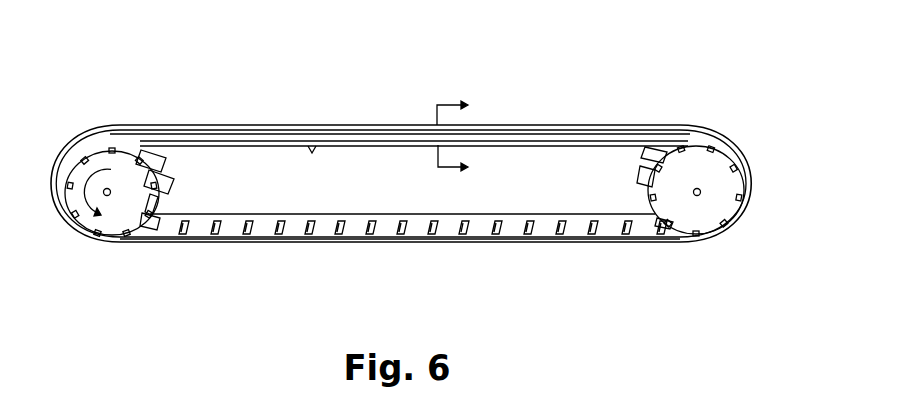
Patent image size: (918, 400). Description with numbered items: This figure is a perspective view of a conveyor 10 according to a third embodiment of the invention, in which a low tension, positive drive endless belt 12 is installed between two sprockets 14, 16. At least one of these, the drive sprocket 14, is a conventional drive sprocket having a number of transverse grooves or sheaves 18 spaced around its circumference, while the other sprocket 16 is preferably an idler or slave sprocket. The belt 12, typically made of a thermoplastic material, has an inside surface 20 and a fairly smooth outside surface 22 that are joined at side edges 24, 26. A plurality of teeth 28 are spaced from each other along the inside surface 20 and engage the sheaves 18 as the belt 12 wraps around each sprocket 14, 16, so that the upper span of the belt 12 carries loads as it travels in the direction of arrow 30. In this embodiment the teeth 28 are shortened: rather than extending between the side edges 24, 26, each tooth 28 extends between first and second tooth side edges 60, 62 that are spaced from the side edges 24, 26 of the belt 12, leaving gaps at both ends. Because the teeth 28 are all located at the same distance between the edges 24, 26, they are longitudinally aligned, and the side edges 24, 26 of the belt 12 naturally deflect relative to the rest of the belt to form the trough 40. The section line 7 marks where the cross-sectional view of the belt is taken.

The conveyor 10 is at (527, 50).
The endless belt 12 is at (253, 125).
The drive sprocket 14 is at (122, 212).
The idler sprocket 16 is at (713, 212).
The sheaves 18 is at (163, 194).
The inside surface 20 is at (543, 227).
The outside surface 22 is at (536, 130).
The side edge 24 is at (352, 127).
The side edge 26 is at (312, 146).
The teeth 28 is at (337, 230).
The arrow 30 is at (86, 200).
The trough 40 is at (603, 132).
The first tooth side edge 60 is at (465, 219).
The second tooth side edge 62 is at (462, 235).
The section line 7- 7 is at (455, 136).